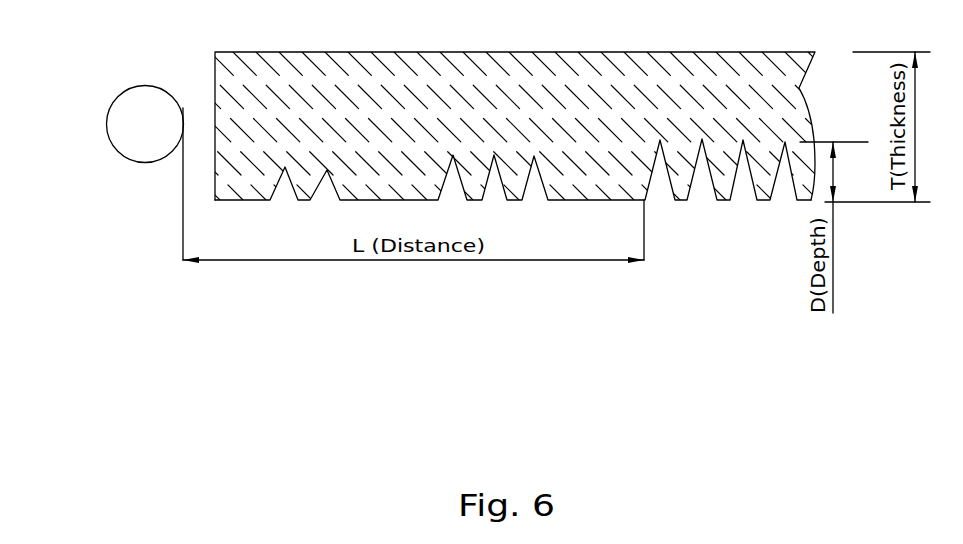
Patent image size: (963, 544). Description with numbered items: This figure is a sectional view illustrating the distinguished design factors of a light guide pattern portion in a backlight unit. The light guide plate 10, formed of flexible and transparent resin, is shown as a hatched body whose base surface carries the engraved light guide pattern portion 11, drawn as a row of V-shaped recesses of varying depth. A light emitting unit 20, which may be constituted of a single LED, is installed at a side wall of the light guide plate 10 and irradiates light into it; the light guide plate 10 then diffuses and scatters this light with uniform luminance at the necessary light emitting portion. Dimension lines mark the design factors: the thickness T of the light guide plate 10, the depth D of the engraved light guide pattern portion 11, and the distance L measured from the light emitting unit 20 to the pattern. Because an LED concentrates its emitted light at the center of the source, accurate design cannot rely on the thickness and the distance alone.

The light guide plate 10 is at (813, 89).
The light guide pattern portion 11 is at (765, 203).
The light emitting unit 20 is at (105, 117).